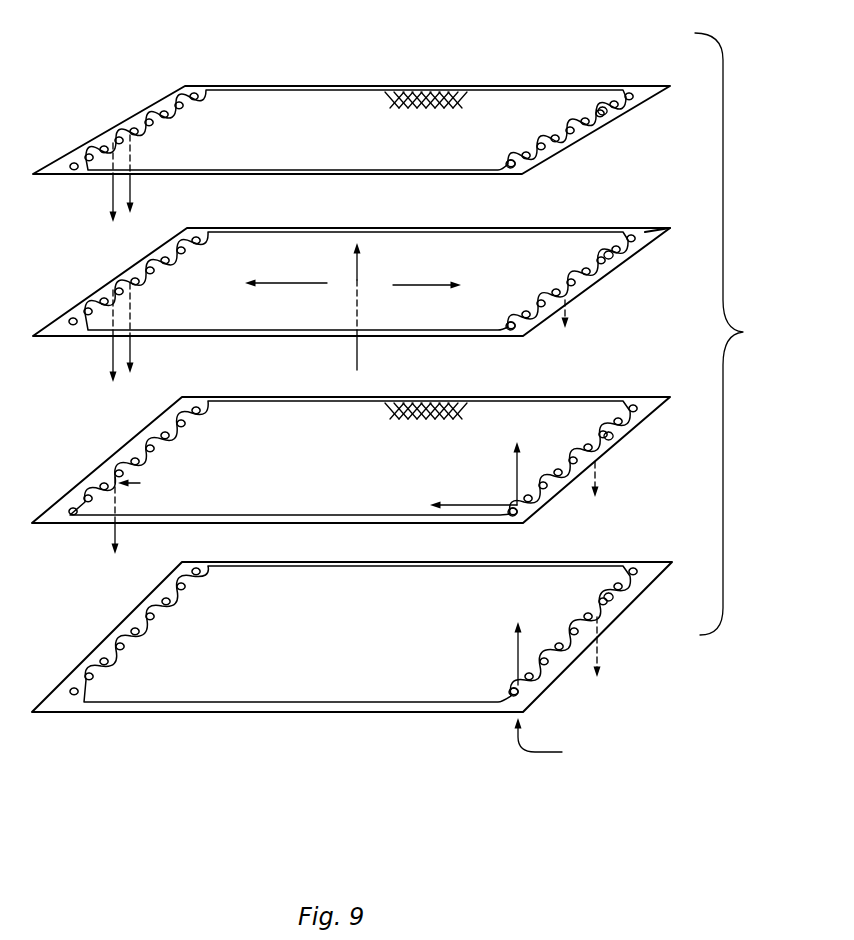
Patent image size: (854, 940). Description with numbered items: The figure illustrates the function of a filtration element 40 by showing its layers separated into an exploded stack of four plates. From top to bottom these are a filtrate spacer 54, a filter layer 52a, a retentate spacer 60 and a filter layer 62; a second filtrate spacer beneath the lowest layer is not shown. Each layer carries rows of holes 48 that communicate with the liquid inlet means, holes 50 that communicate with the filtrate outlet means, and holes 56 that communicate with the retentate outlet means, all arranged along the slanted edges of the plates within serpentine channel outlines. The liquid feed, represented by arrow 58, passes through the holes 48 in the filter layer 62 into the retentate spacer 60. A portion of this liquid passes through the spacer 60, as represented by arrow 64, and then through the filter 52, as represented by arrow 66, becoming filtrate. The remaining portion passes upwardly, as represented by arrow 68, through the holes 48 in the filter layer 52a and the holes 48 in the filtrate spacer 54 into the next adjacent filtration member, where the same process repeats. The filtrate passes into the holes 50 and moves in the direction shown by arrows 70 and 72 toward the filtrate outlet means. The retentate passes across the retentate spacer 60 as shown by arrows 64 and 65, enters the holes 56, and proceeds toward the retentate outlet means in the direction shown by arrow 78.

The filtration element 40 is at (739, 334).
The holes 48 is at (607, 107).
The holes 50 is at (130, 134).
The filter 52 is at (425, 267).
The filter layer 52a is at (645, 230).
The filtrate spacer 54 is at (372, 140).
The holes 56 is at (198, 89).
The arrow 58 is at (540, 752).
The retentate spacer 60 is at (345, 479).
The filter layer 62 is at (370, 650).
The arrow 64 is at (462, 500).
The arrow 65 is at (140, 483).
The arrow 66 is at (355, 270).
The arrow 68 is at (515, 475).
The arrow 70 is at (134, 188).
The arrow 72 is at (572, 315).
The arrow 78 is at (108, 192).